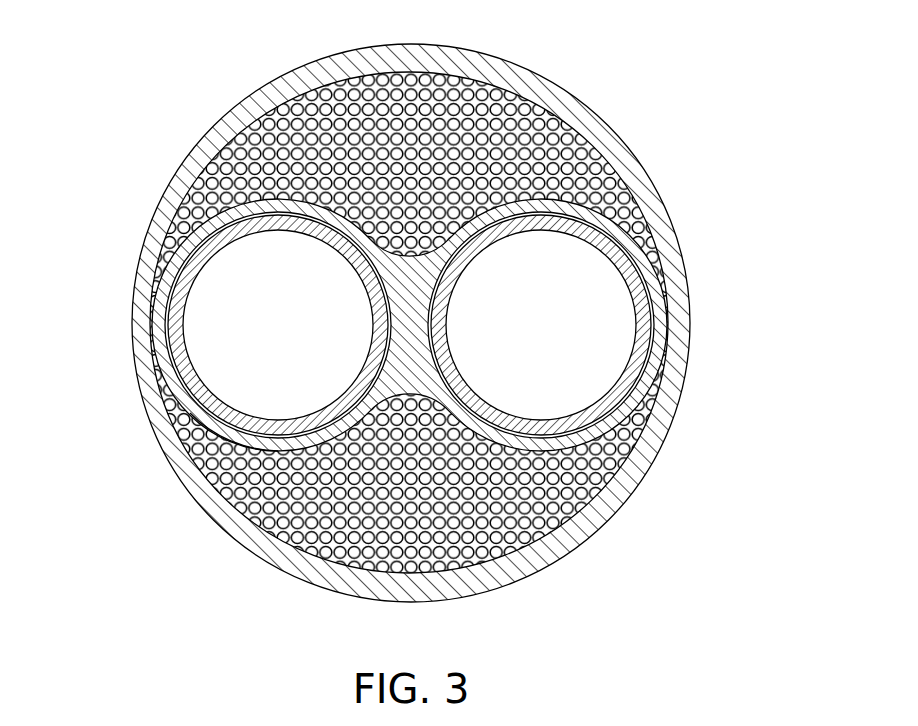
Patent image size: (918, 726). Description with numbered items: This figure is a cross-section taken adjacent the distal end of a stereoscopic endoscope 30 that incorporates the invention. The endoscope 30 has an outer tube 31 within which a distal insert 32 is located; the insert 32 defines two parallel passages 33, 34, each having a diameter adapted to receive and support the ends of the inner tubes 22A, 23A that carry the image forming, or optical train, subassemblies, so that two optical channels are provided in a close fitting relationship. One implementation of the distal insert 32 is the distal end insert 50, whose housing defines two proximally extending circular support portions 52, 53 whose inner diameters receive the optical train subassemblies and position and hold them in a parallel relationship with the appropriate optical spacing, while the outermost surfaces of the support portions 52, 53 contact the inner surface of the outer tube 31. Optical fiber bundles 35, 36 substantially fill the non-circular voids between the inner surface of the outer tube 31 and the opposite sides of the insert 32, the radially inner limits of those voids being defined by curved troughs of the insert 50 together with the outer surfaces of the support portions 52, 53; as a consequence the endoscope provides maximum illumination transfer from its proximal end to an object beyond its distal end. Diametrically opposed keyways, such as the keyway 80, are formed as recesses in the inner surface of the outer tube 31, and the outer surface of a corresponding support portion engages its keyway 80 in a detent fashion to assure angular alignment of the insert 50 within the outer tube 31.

The stereoscopic endoscope 30 is at (616, 95).
The outer tube 31 is at (493, 62).
The insert 32 is at (592, 302).
The passage 33 is at (281, 336).
The passage 34 is at (525, 336).
The optical fiber bundle 35 is at (400, 108).
The optical fiber bundle 36 is at (553, 492).
The inner tube 22A is at (165, 220).
The inner tube 23A is at (655, 238).
The distal end insert 50 is at (165, 412).
The circular support portion 52 is at (172, 305).
The circular support portion 53 is at (645, 352).
The keyway 80 is at (150, 308).